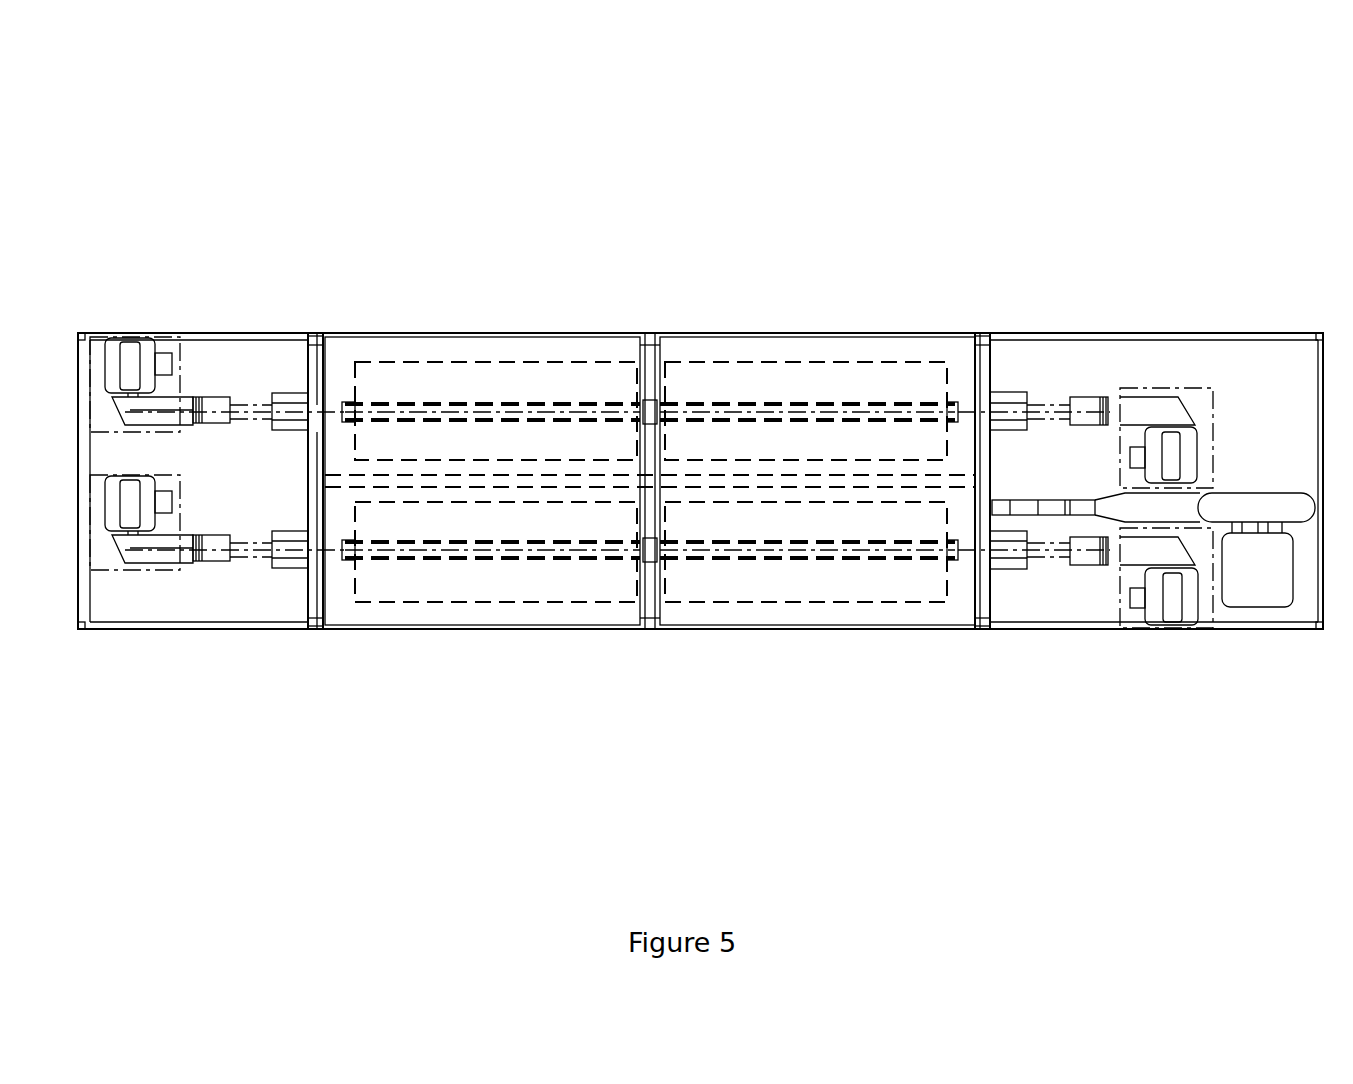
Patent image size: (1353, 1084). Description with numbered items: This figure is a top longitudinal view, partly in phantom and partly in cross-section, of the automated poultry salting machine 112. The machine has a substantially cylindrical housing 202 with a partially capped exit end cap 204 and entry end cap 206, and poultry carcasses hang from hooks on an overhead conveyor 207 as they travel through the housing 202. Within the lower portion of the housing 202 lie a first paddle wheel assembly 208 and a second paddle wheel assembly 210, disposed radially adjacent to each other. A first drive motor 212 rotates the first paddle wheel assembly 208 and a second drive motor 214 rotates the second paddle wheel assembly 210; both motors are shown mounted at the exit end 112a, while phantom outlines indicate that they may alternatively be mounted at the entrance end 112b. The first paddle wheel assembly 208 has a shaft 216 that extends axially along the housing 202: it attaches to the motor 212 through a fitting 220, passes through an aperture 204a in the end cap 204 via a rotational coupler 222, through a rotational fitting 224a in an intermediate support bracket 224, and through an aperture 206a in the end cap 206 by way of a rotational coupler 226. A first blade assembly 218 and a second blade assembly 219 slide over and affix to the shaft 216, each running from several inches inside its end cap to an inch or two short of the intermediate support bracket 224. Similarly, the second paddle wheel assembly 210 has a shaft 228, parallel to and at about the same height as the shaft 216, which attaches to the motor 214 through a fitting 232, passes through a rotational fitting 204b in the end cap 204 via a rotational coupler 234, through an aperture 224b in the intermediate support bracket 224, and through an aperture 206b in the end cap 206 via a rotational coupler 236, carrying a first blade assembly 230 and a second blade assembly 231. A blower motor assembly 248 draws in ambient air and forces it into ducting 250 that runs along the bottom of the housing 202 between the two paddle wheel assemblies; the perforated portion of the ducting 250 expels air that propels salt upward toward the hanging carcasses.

The automated poultry salting machine 112 is at (705, 334).
The exit end 112a is at (157, 215).
The entrance end 112b is at (1232, 215).
The housing 202 is at (781, 234).
The exit end cap 204 is at (298, 338).
The aperture 204a is at (318, 340).
The rotational fitting 204b is at (320, 632).
The entry end cap 206 is at (1003, 337).
The aperture 206a is at (982, 340).
The aperture 206b is at (983, 630).
The overhead conveyor 207 is at (962, 485).
The first paddle wheel assembly 208 is at (425, 330).
The second paddle wheel assembly 210 is at (425, 640).
The first drive motor 212 is at (147, 340).
The second drive motor 214 is at (110, 540).
The shaft 216 is at (245, 420).
The first blade assembly 218 is at (553, 362).
The second blade assembly 219 is at (878, 362).
The fitting 220 is at (222, 425).
The rotational coupler 222 is at (273, 393).
The intermediate support bracket 224 is at (648, 345).
The rotational fitting 224a is at (657, 340).
The aperture 224b is at (648, 630).
The rotational coupler 226 is at (1020, 392).
The shaft 228 is at (245, 535).
The first blade assembly 230 is at (556, 602).
The second blade assembly 231 is at (750, 602).
The fitting 232 is at (215, 568).
The rotational coupler 234 is at (290, 568).
The rotational coupler 236 is at (1013, 565).
The blower motor assembly 248 is at (1267, 607).
The ducting 250 is at (1052, 500).